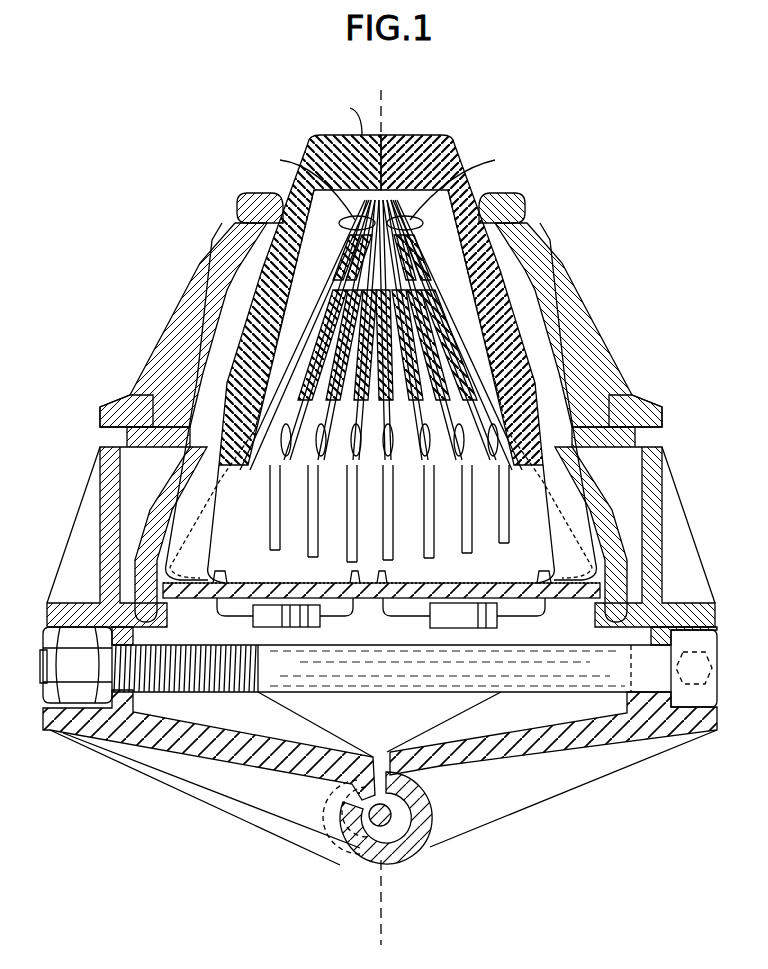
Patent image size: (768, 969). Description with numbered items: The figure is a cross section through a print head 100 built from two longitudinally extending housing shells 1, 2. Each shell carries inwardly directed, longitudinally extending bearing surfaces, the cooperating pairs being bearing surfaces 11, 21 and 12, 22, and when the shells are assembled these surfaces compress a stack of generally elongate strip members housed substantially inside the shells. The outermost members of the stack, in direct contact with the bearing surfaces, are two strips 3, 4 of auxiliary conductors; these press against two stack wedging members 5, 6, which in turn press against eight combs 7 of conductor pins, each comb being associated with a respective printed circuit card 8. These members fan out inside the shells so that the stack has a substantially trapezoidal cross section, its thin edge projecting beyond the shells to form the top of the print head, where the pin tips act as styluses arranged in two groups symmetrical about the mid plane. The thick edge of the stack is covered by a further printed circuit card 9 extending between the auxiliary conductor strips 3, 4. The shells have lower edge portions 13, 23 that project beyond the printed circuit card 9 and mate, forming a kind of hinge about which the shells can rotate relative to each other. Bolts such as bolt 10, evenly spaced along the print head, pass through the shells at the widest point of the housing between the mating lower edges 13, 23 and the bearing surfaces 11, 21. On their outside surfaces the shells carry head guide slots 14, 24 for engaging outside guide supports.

The print head 100 is at (470, 143).
The housing shell 1 is at (188, 262).
The housing shell 2 is at (567, 265).
The auxiliary conductor strip 3 is at (246, 263).
The auxiliary conductor strip 4 is at (515, 256).
The stack wedging member 5 is at (265, 367).
The stack wedging member 6 is at (528, 352).
The combs of conductor pins 7 is at (293, 373).
The printed circuit card 8 is at (353, 513).
The printed circuit card 9 is at (273, 590).
The bolt 10 is at (343, 663).
The bearing surface 11 is at (157, 625).
The bearing surface 12 is at (280, 200).
The lower edge portion 13 is at (373, 825).
The head guide slot 14 is at (108, 437).
The bearing surface 21 is at (601, 629).
The bearing surface 22 is at (490, 200).
The lower edge portion 23 is at (423, 813).
The head guide slot 24 is at (651, 437).